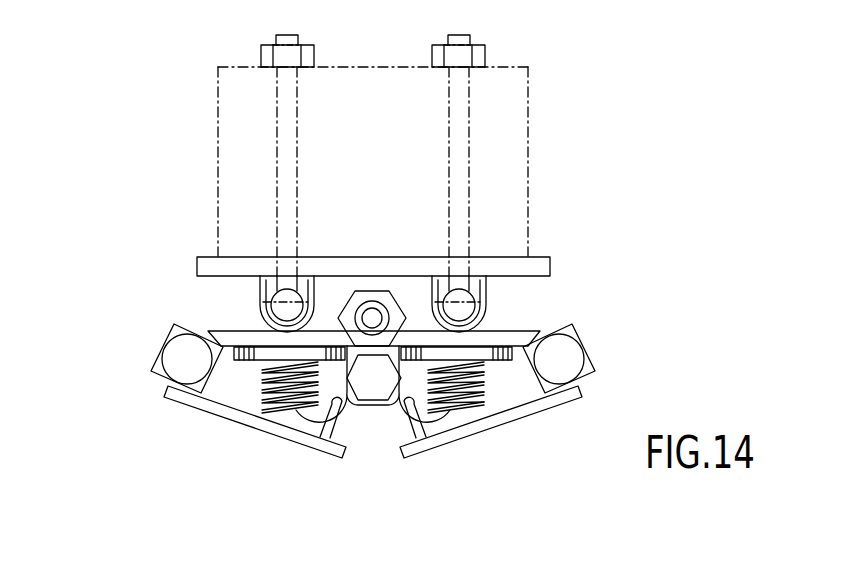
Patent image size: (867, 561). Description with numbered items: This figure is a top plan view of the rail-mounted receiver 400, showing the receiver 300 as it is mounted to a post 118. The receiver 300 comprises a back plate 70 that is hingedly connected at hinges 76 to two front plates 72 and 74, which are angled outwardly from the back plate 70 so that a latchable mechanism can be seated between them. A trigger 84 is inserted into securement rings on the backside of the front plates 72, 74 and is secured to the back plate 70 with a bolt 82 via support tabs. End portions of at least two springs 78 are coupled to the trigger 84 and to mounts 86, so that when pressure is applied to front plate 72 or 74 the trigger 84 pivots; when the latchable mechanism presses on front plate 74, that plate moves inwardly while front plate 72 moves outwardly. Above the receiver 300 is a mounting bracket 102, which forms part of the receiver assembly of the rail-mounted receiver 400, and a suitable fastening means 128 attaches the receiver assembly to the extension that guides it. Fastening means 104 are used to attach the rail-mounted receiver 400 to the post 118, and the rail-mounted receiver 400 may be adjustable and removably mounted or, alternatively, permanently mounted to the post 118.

The fastening means 104 is at (470, 105).
The rail-mounted receiver 400 is at (614, 135).
The post 118 is at (508, 188).
The mounting bracket 102 is at (542, 265).
The receiver 300 is at (160, 297).
The fastening means 128 is at (372, 291).
The back plate 70 is at (513, 334).
The mounts 86 is at (258, 353).
The springs 78 is at (273, 403).
The trigger 84 is at (378, 410).
The bolt 82 is at (382, 373).
The front plate 72 is at (227, 407).
The front plate 74 is at (452, 434).
The hinges 76 is at (575, 355).